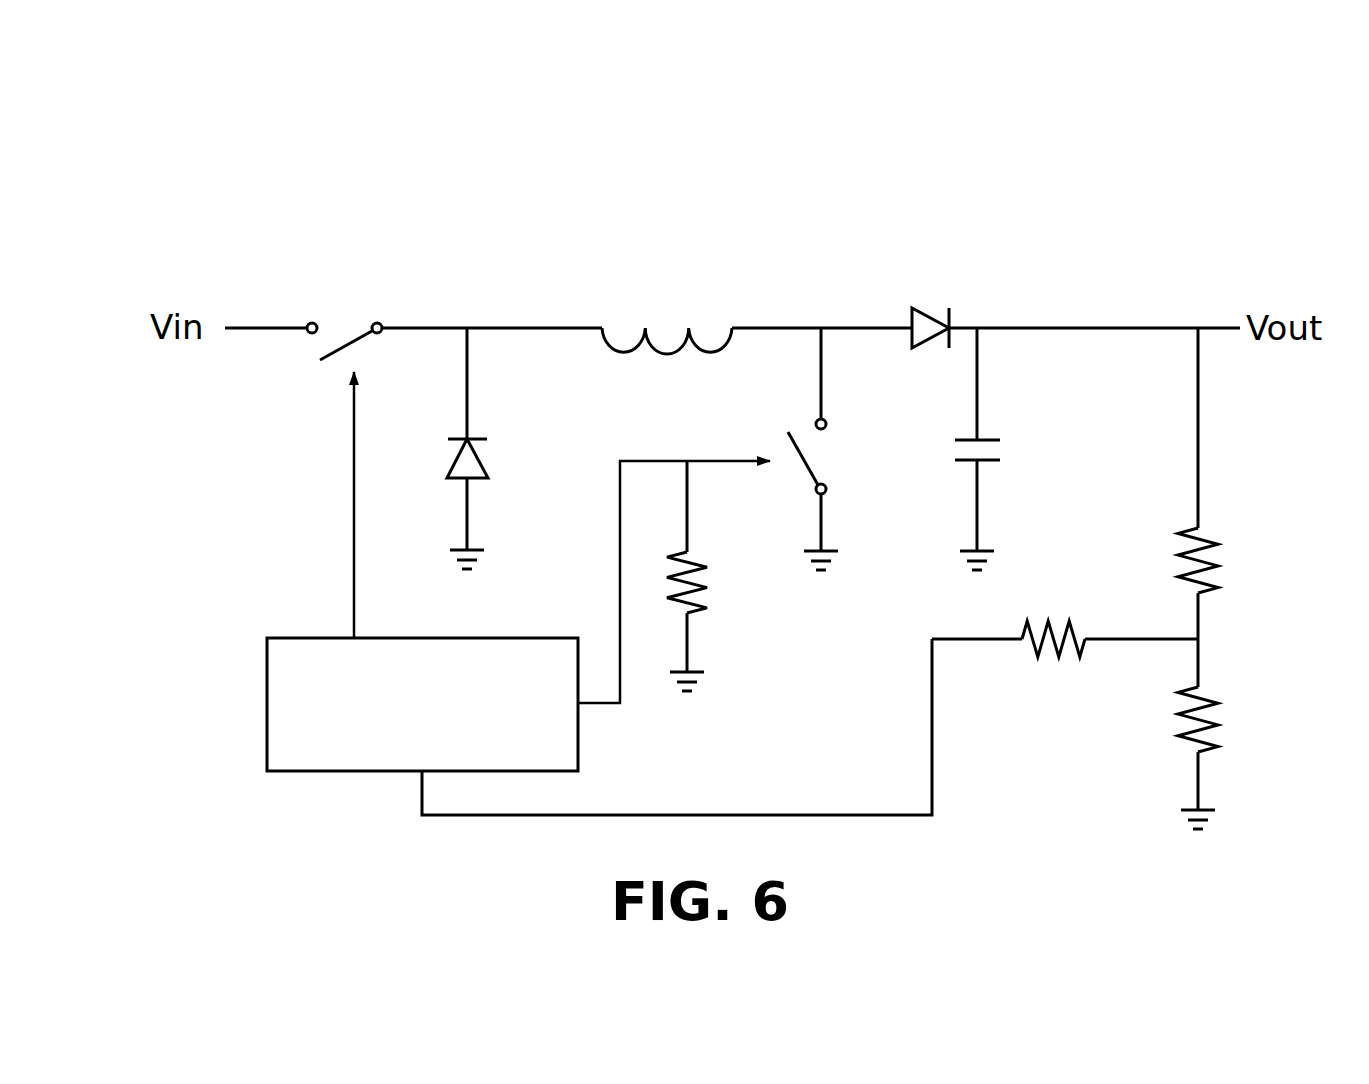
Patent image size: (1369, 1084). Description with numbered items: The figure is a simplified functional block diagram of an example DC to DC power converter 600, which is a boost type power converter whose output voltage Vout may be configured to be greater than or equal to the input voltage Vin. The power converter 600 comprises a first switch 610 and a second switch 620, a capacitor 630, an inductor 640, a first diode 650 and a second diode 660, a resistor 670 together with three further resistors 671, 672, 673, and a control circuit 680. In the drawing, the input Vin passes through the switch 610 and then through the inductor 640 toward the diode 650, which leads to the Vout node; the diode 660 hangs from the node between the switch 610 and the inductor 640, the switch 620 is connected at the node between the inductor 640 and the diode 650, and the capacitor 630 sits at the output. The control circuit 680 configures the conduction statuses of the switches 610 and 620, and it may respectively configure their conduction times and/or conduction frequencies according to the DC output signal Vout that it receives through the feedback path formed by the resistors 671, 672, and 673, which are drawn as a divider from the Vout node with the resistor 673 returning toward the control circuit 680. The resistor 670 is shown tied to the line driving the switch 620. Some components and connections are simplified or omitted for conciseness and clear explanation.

The DC to DC power converter 600 is at (1203, 150).
The switch 610 is at (380, 303).
The switch 620 is at (853, 461).
The capacitor 630 is at (1026, 448).
The inductor 640 is at (672, 308).
The diode 650 is at (948, 289).
The diode 660 is at (513, 459).
The resistor 670 is at (738, 594).
The resistor 671 is at (1246, 548).
The resistor 672 is at (1256, 723).
The resistor 673 is at (1070, 678).
The control circuit 680 is at (240, 658).